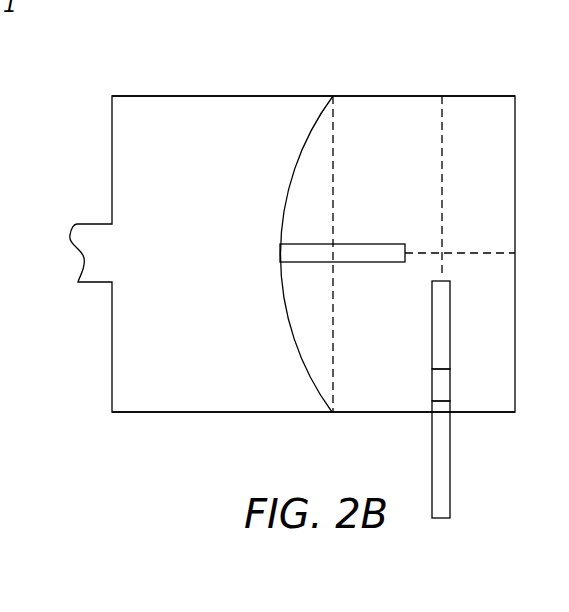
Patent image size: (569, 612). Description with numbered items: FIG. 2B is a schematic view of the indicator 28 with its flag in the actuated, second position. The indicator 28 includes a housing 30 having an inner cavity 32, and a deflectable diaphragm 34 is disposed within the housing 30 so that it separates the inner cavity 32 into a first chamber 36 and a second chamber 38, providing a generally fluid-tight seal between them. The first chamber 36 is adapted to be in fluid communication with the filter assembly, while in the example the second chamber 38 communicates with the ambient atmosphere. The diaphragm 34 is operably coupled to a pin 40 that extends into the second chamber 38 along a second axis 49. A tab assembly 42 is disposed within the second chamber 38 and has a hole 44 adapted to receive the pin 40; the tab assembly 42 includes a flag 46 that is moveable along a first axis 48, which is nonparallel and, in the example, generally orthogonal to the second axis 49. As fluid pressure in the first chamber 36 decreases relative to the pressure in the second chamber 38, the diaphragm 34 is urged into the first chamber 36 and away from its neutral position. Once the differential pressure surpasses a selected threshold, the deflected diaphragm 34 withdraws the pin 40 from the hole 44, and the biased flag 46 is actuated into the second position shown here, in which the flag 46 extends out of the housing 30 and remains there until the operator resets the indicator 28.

The indicator 28 is at (481, 57).
The housing 30 is at (395, 96).
The inner cavity 32 is at (214, 96).
The deflectable diaphragm 34 is at (286, 190).
The first chamber 36 is at (175, 398).
The second chamber 38 is at (377, 398).
The pin 40 is at (370, 244).
The tab assembly 42 is at (452, 320).
The hole 44 is at (452, 385).
The flag 46 is at (452, 455).
The first axis 48 is at (443, 182).
The second axis 49 is at (482, 253).